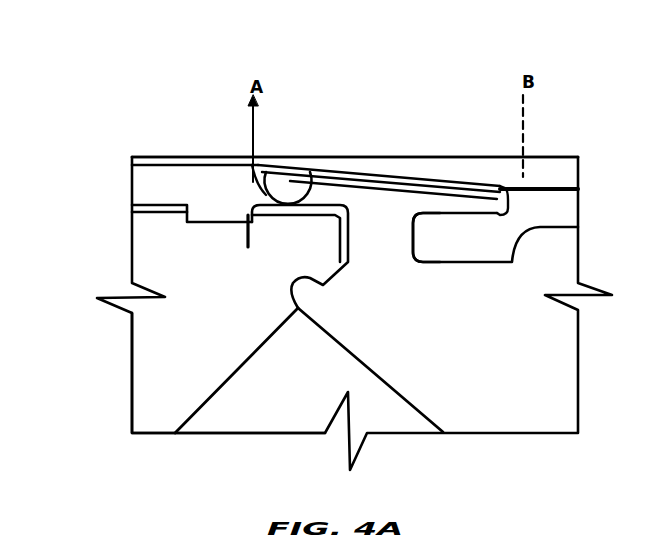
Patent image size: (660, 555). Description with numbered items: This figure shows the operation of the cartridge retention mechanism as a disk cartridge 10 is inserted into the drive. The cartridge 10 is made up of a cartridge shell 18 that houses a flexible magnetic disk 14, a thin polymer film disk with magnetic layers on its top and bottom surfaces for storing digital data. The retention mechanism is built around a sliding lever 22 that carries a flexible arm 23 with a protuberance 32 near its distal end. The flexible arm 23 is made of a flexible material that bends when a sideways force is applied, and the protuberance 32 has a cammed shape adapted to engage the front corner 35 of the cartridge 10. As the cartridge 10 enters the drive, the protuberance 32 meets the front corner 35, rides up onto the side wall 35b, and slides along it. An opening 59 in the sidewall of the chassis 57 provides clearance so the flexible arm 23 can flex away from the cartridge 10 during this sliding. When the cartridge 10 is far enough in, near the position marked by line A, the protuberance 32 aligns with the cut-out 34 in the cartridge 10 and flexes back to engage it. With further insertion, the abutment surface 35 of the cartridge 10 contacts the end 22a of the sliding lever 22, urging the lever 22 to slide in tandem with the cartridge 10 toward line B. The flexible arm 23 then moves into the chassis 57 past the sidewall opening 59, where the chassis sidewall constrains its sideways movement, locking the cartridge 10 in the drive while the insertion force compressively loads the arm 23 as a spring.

The disk cartridge 10 is at (158, 460).
The flexible magnetic disk 14 is at (385, 371).
The cartridge shell 18 is at (162, 363).
The sliding lever 22 is at (552, 203).
The end of sliding lever 22a is at (414, 231).
The flexible arm 23 is at (367, 183).
The protuberance 32 is at (288, 192).
The cut-out 34 is at (213, 218).
The front corner 35 is at (349, 239).
The side wall 35b is at (252, 165).
The chassis 57 is at (550, 158).
The opening 59 is at (158, 178).